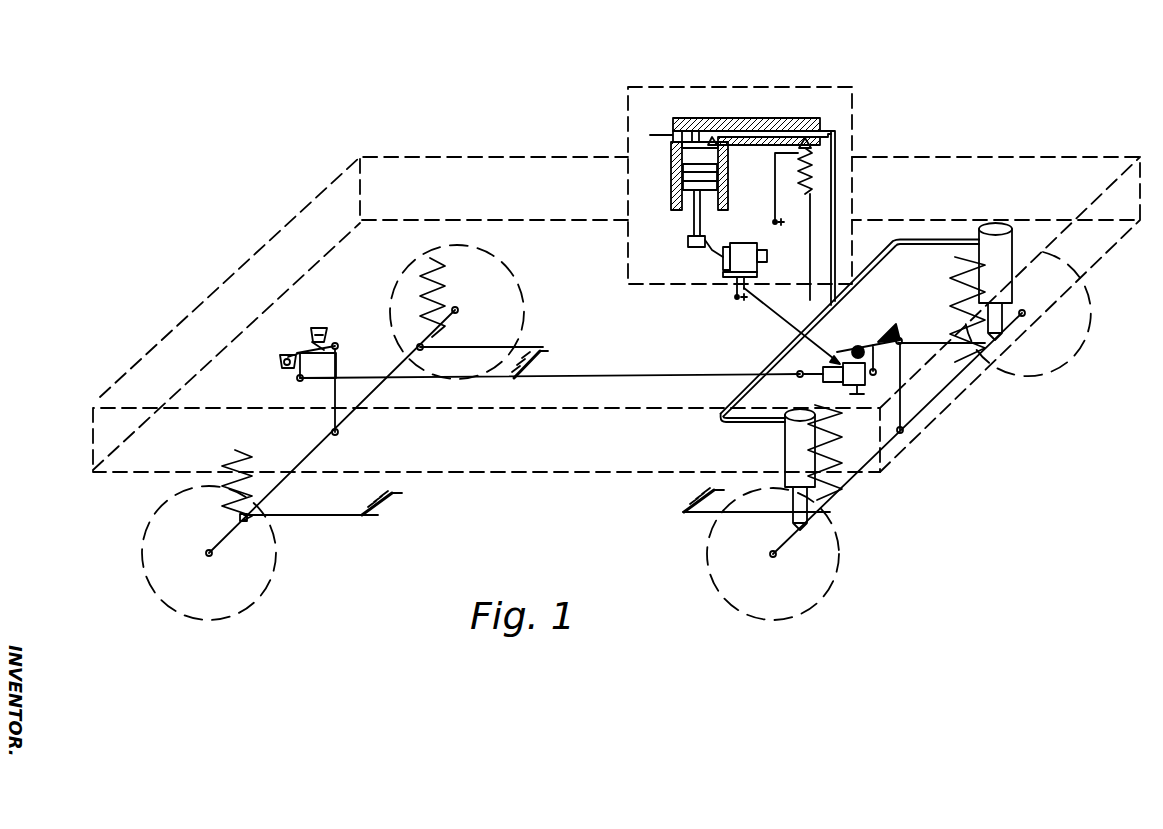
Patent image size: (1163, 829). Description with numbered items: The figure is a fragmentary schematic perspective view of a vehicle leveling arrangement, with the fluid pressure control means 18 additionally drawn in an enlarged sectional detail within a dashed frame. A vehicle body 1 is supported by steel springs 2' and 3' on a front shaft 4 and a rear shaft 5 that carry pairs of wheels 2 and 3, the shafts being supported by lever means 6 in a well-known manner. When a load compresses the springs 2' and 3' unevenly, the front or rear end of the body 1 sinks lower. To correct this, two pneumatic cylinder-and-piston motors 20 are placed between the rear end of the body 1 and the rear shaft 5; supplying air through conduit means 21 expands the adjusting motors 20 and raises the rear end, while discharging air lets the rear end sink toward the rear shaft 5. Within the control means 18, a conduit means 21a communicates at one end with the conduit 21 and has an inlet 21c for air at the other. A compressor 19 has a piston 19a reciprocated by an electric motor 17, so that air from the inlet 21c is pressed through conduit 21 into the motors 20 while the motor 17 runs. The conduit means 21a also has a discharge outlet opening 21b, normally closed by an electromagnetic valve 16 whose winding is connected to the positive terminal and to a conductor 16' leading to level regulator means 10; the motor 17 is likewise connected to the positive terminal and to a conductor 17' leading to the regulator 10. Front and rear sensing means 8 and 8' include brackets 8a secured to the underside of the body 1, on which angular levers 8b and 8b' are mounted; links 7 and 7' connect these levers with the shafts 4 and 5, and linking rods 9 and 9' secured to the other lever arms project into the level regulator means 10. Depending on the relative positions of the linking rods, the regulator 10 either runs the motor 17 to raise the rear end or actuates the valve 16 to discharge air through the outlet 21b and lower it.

The body 1 is at (172, 350).
The front wheels 2 is at (344, 441).
The front steel springs 2' is at (287, 386).
The rear wheels 3 is at (906, 436).
The rear steel springs 3' is at (896, 378).
The front shaft 4 is at (318, 445).
The rear shaft 5 is at (930, 435).
The lever means 6 is at (378, 515).
The link 7 is at (315, 392).
The link 7' is at (942, 386).
The front sensing means 8 is at (313, 343).
The bracket 8a is at (321, 330).
The angular lever 8b is at (277, 368).
The rear sensing means 8' is at (911, 339).
The angular lever 8b' is at (904, 329).
The linking rod 9 is at (550, 416).
The linking rod 9' is at (866, 388).
The level regulator means 10 is at (824, 372).
The electromagnetic valve 16 is at (833, 174).
The conductor 16' is at (797, 252).
The electric motor 17 is at (674, 271).
The conductor 17' is at (792, 326).
The fluid pressure control means 18 is at (668, 83).
The compressor 19 is at (676, 163).
The piston 19a is at (697, 208).
The pneumatic cylinder-and-piston motors 20 is at (1080, 276).
The conduit means 21 is at (842, 205).
The conduit means 21a is at (746, 121).
The outlet opening 21b is at (818, 131).
The inlet 21c is at (663, 129).